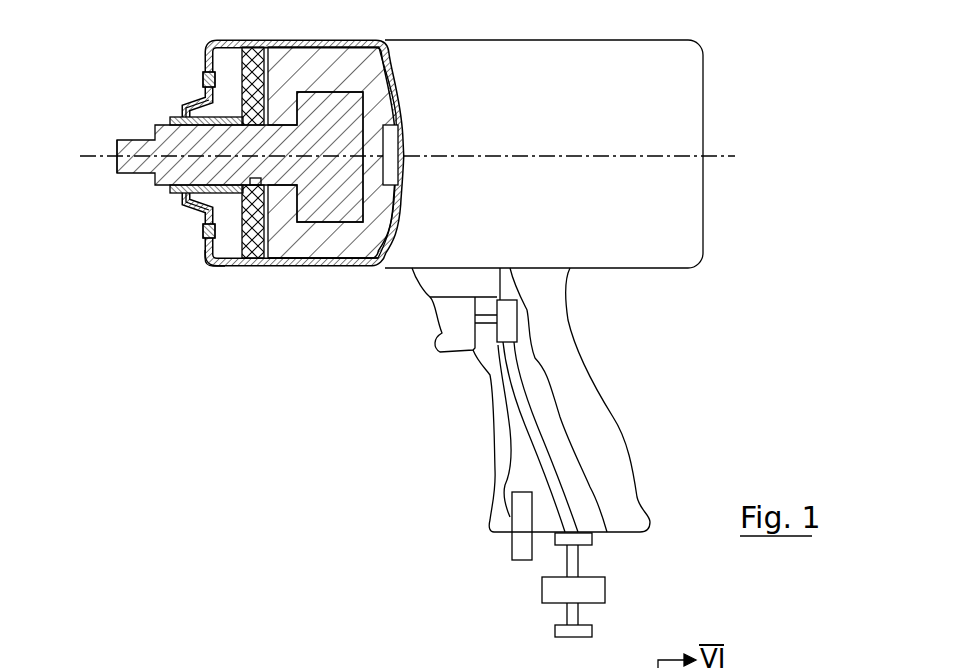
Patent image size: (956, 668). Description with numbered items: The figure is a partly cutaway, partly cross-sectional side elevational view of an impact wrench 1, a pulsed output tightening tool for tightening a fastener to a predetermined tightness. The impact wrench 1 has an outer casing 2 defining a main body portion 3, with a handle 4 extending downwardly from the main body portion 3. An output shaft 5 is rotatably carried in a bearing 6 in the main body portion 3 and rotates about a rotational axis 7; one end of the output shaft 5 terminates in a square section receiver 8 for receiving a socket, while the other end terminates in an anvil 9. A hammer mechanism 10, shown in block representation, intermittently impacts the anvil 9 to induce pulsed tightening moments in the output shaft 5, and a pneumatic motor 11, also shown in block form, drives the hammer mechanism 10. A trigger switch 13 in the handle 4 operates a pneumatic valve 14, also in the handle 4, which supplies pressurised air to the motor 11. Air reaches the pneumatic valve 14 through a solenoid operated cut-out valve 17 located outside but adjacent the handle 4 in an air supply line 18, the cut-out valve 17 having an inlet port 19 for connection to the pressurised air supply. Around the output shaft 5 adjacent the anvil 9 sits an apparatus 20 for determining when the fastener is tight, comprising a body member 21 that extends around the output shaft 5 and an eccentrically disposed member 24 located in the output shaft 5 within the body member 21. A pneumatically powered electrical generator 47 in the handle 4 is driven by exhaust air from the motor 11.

The impact wrench 1 is at (435, 323).
The outer casing 2 is at (560, 135).
The main body portion 3 is at (670, 110).
The handle 4 is at (587, 420).
The output shaft 5 is at (148, 187).
The bearing 6 is at (188, 207).
The rotational axis 7 is at (98, 148).
The square section receiver 8 is at (133, 170).
The anvil 9 is at (320, 100).
The hammer mechanism 10 is at (317, 260).
The motor 11 is at (398, 133).
The trigger switch 13 is at (457, 340).
The pneumatic valve 14 is at (508, 328).
The cut-out valve 17 is at (598, 590).
The air supply line 18 is at (577, 563).
The inlet port 19 is at (585, 632).
The apparatus 20 is at (232, 28).
The body member 21 is at (250, 260).
The eccentrically disposed member 24 is at (213, 265).
The electrical generator 47 is at (520, 547).